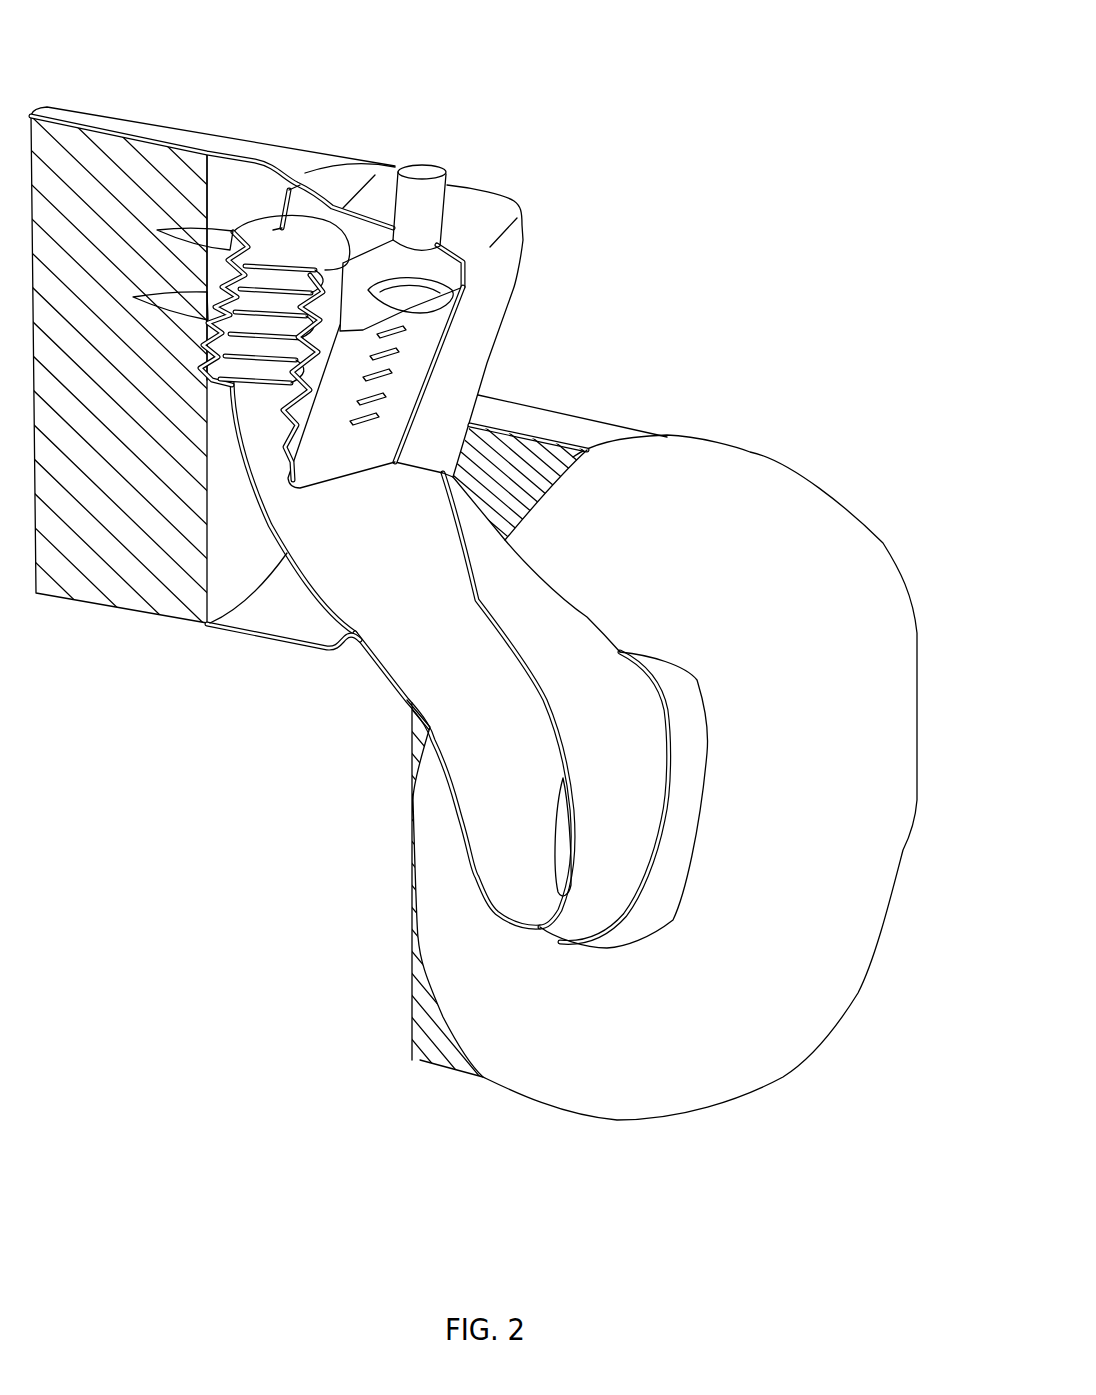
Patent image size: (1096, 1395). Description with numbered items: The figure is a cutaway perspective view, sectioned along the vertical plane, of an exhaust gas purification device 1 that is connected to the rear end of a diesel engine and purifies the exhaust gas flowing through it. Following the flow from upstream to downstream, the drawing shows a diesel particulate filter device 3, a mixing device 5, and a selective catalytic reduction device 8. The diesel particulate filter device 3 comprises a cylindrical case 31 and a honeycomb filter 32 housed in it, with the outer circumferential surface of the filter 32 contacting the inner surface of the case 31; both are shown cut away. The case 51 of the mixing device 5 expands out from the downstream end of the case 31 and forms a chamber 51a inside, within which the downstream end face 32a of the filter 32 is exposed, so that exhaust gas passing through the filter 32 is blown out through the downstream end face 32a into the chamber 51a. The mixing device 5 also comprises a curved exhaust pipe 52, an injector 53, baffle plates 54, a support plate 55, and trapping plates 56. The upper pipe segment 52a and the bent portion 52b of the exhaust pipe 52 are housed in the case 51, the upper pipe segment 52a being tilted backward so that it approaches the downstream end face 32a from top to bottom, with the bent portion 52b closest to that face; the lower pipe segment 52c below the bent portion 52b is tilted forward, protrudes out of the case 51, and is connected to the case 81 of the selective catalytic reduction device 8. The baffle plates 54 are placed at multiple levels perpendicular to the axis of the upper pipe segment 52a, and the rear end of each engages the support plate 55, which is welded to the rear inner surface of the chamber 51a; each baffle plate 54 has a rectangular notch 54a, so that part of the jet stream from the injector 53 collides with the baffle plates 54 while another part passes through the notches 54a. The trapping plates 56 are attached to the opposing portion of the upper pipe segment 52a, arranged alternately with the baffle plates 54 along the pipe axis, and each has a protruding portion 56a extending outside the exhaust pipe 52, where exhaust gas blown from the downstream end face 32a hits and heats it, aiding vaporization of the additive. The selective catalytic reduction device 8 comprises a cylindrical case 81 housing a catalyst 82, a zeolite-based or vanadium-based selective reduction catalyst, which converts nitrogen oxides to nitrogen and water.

The exhaust gas purification device 1 is at (806, 105).
The diesel particulate filter device 3 is at (161, 111).
The case 31 is at (103, 114).
The filter 32 is at (127, 585).
The downstream end face 32a is at (228, 175).
The mixing device 5 is at (530, 201).
The case 51 is at (347, 177).
The chamber 51a is at (281, 606).
The exhaust pipe 52 is at (553, 460).
The upper pipe segment 52a is at (305, 200).
The bent portion 52b is at (247, 500).
The lower pipe segment 52c is at (483, 827).
The injector 53 is at (421, 170).
The baffle plates 54 is at (462, 262).
The notch 54a is at (455, 300).
The support plate 55 is at (430, 352).
The trapping plates 56 is at (277, 277).
The protruding portion 56a is at (160, 233).
The selective catalytic reduction device 8 is at (646, 416).
The case 81 is at (490, 415).
The catalyst 82 is at (573, 443).